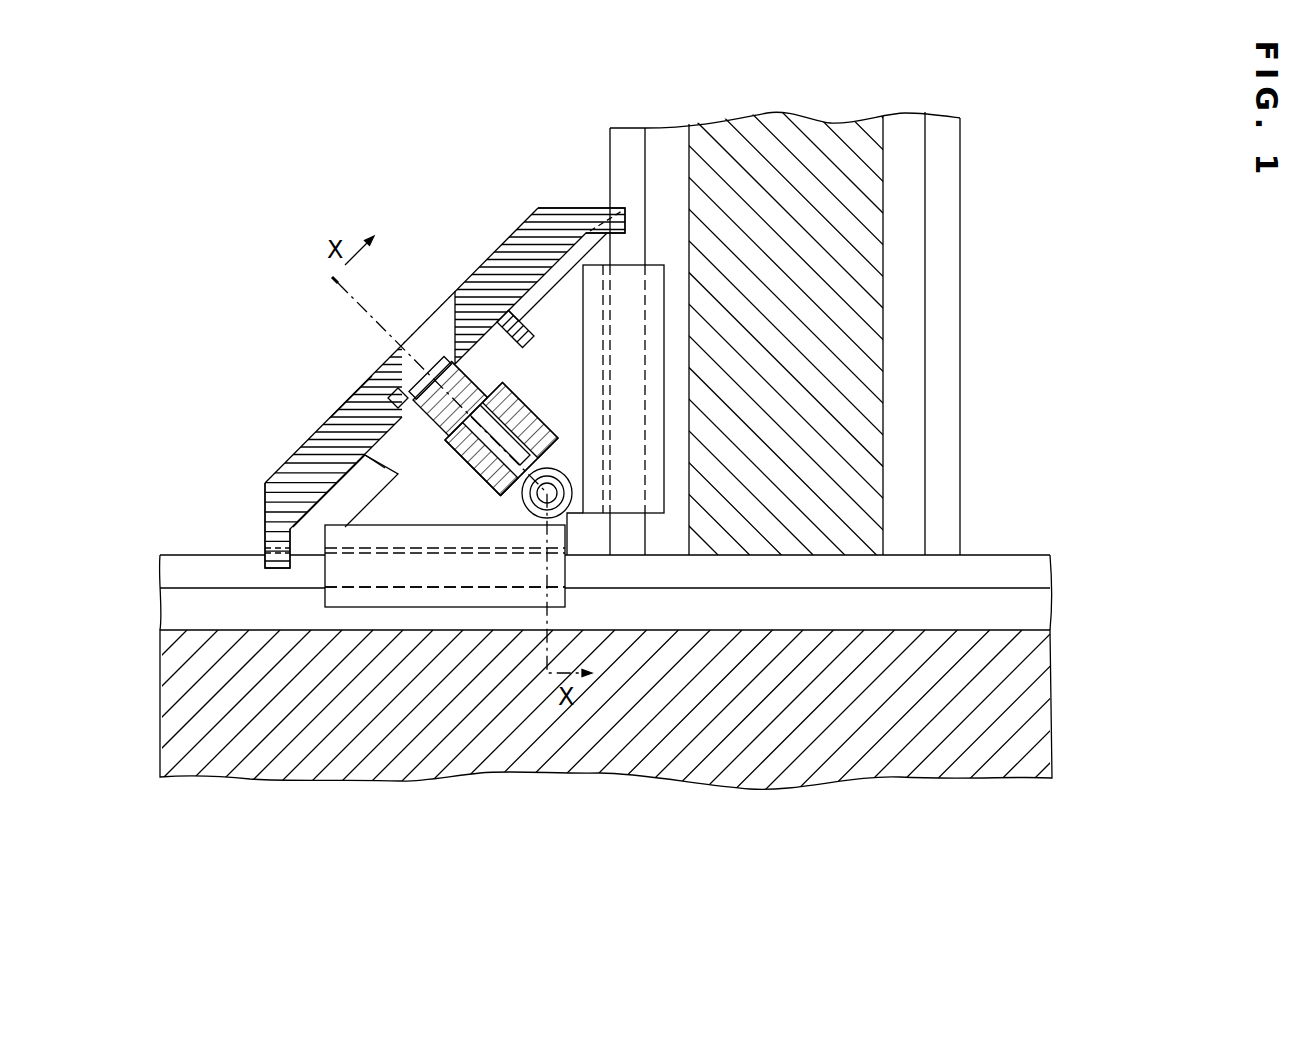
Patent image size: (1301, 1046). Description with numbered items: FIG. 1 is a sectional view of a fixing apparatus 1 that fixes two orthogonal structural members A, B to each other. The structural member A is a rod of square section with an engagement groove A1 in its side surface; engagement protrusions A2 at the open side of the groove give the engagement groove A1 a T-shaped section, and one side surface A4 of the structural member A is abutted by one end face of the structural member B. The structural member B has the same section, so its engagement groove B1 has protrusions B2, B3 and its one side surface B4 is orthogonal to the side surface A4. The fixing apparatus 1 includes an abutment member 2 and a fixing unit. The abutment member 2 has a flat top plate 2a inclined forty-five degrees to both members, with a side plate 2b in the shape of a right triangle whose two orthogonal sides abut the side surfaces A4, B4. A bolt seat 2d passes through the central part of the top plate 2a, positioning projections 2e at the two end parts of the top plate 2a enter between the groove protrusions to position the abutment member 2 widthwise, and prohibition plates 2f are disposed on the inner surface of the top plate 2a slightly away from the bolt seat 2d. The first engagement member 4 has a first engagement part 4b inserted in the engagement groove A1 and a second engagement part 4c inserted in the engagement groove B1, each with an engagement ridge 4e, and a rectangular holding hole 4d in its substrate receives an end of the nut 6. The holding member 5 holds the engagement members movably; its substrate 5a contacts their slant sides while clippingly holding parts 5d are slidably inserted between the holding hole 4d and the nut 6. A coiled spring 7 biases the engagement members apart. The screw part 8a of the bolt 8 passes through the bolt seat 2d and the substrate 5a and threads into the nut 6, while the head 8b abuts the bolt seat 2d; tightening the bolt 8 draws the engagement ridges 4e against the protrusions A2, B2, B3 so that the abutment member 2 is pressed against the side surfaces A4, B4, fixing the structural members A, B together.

The fixing apparatus 1 is at (286, 452).
The abutment member 2 is at (486, 246).
The top plate 2a is at (342, 418).
The side plate 2b is at (327, 510).
The bolt seat 2d is at (392, 400).
The positioning projection 2e is at (618, 218).
The prohibition plate 2f is at (486, 347).
The first engagement member 4 is at (537, 300).
The first engagement part 4b is at (430, 580).
The second engagement part 4c is at (630, 347).
The holding hole 4d is at (468, 500).
The engagement ridge 4e is at (660, 397).
The holding member 5 is at (402, 418).
The substrate 5a is at (432, 348).
The clippingly holding part 5d is at (515, 505).
The nut 6 is at (446, 505).
The coiled spring 7 is at (547, 520).
The bolt 8 is at (436, 318).
The screw part 8a is at (472, 458).
The head 8b is at (440, 334).
The structural member A is at (160, 705).
The engagement groove A1 is at (165, 608).
The engagement protrusion A2 is at (165, 566).
The side surface A4 is at (181, 553).
The structural member B is at (870, 480).
The engagement groove B1 is at (669, 140).
The protrusion B2 is at (626, 140).
The protrusion B3 is at (947, 200).
The side surface B4 is at (610, 150).